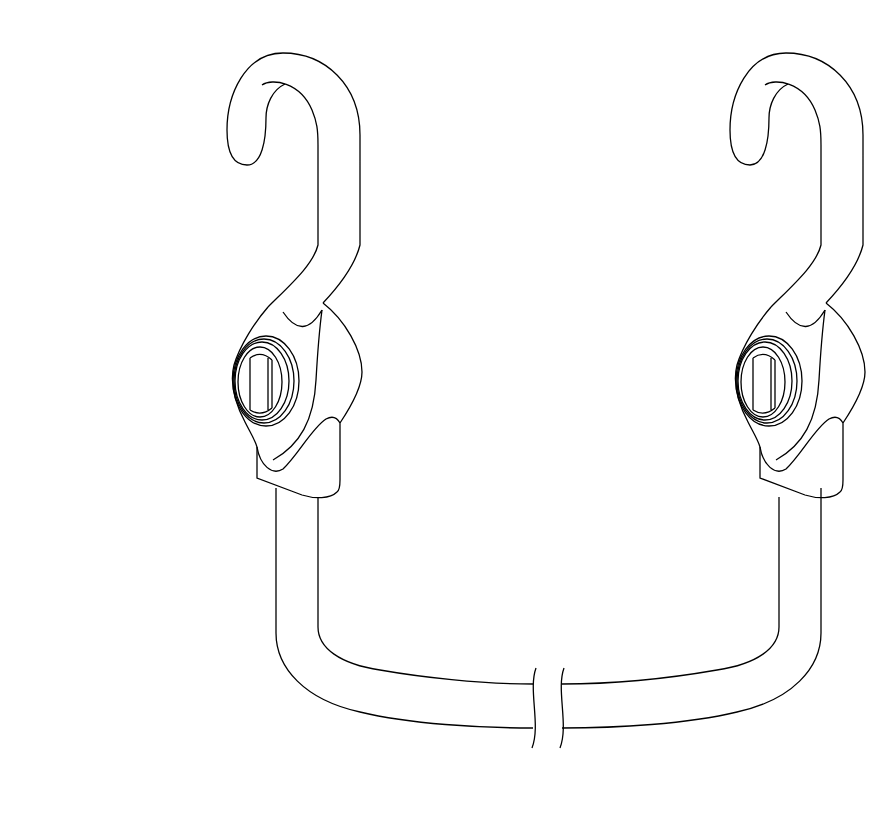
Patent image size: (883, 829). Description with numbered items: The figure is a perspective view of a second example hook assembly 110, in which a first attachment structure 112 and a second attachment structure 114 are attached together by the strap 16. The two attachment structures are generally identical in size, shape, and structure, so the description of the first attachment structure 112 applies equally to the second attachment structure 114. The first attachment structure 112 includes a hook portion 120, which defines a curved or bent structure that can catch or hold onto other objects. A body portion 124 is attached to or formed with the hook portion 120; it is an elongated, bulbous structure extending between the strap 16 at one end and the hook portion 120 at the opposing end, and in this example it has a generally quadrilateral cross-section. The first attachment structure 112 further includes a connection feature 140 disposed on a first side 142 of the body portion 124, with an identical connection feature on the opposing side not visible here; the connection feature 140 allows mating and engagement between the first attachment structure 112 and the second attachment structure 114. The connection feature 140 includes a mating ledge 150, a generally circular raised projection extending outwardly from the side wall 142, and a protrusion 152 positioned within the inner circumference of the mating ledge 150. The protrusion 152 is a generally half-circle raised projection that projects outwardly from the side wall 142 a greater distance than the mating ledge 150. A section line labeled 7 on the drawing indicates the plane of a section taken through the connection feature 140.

The second example hook assembly 110 is at (72, 98).
The first attachment structure 112 is at (380, 102).
The second attachment structure 114 is at (705, 98).
The hook portion 120 is at (362, 195).
The body portion 124 is at (353, 420).
The connection feature 140 is at (214, 371).
The first side 142 is at (260, 426).
The mating ledge 150 is at (285, 365).
The protrusion 152 is at (240, 367).
The strap 16 is at (802, 673).
The section line 7- 7 is at (430, 343).